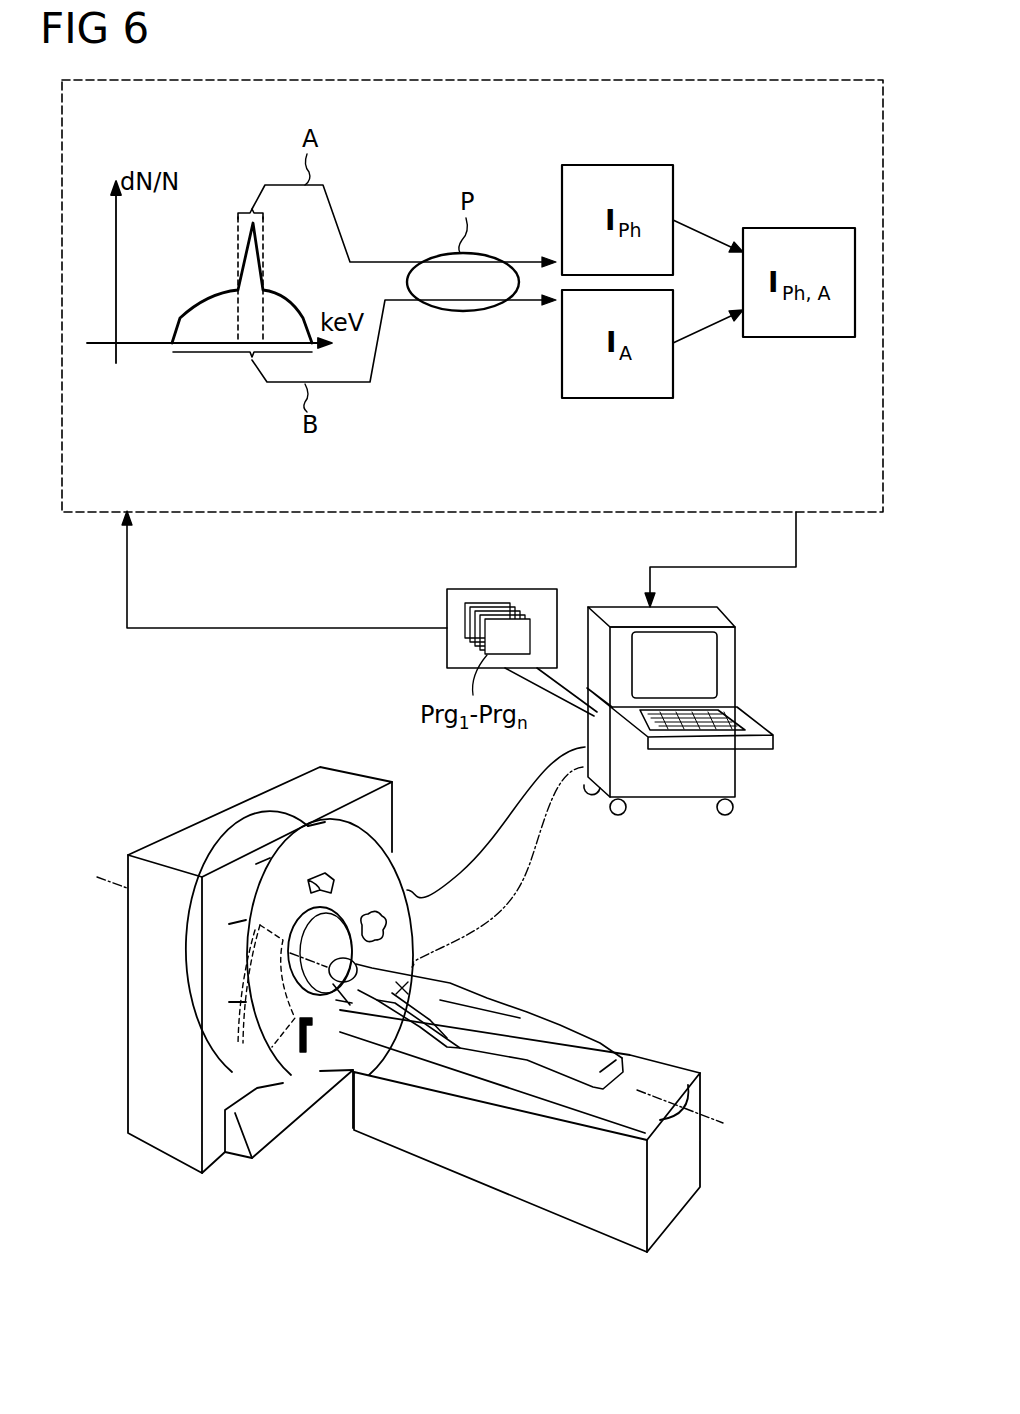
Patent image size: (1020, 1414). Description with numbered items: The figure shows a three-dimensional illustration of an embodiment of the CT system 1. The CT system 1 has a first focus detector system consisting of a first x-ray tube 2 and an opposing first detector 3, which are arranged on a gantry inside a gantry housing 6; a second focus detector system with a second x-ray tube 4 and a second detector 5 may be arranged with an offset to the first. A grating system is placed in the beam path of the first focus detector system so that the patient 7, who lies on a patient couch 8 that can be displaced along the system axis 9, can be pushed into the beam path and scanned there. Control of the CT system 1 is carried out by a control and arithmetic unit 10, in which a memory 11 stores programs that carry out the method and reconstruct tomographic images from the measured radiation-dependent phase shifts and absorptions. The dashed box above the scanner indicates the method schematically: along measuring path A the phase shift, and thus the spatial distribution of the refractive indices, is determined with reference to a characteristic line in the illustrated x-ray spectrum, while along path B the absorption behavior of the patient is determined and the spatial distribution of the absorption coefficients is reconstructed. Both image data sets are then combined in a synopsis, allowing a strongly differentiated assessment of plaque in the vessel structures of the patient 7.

The CT system 1 is at (407, 1018).
The first x-ray tube 2 is at (330, 877).
The first detector 3 is at (317, 1043).
The second x-ray tube 4 is at (382, 927).
The second detector 5 is at (272, 1045).
The gantry housing 6 is at (128, 1085).
The patient 7 is at (503, 1018).
The patient couch 8 is at (542, 1183).
The system axis 9 is at (707, 1113).
The control and arithmetic unit 10 is at (737, 680).
The memory 11 is at (447, 605).